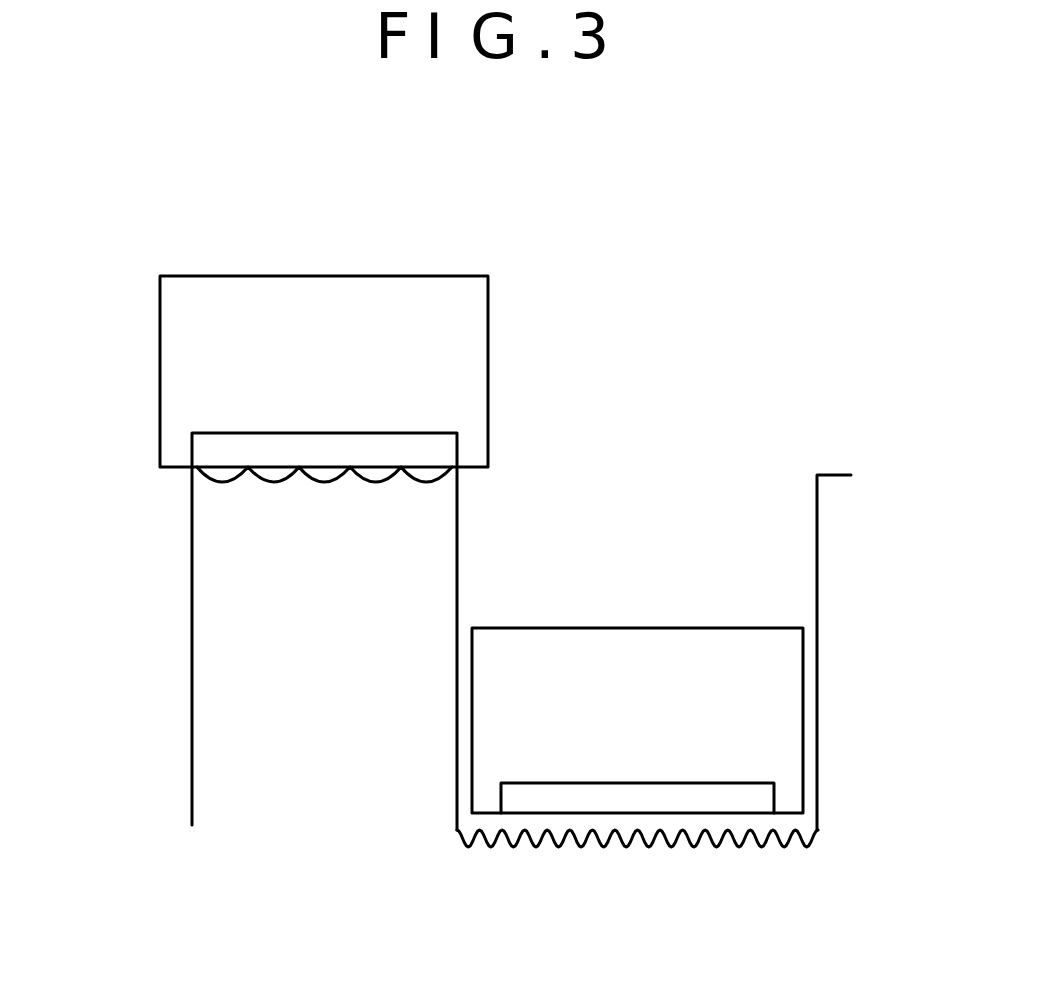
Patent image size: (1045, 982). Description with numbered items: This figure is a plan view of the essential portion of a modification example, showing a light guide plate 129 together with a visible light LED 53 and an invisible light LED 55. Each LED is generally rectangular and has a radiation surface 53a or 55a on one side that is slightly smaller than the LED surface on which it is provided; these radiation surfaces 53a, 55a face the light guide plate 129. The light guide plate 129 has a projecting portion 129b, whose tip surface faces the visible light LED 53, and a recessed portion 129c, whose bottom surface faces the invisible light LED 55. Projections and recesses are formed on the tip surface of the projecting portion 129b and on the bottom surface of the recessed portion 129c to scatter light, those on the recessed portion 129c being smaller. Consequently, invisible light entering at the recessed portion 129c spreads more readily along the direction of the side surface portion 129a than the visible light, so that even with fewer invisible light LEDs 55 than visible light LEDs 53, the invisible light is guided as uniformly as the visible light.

The visible light LED 53 is at (332, 300).
The radiation surface 53a is at (213, 480).
The invisible light LED 55 is at (666, 648).
The radiation surface 55a is at (560, 815).
The light guide plate 129 is at (435, 521).
The side surface portion 129a is at (787, 470).
The projecting portion 129b is at (207, 658).
The recessed portion 129c is at (770, 828).